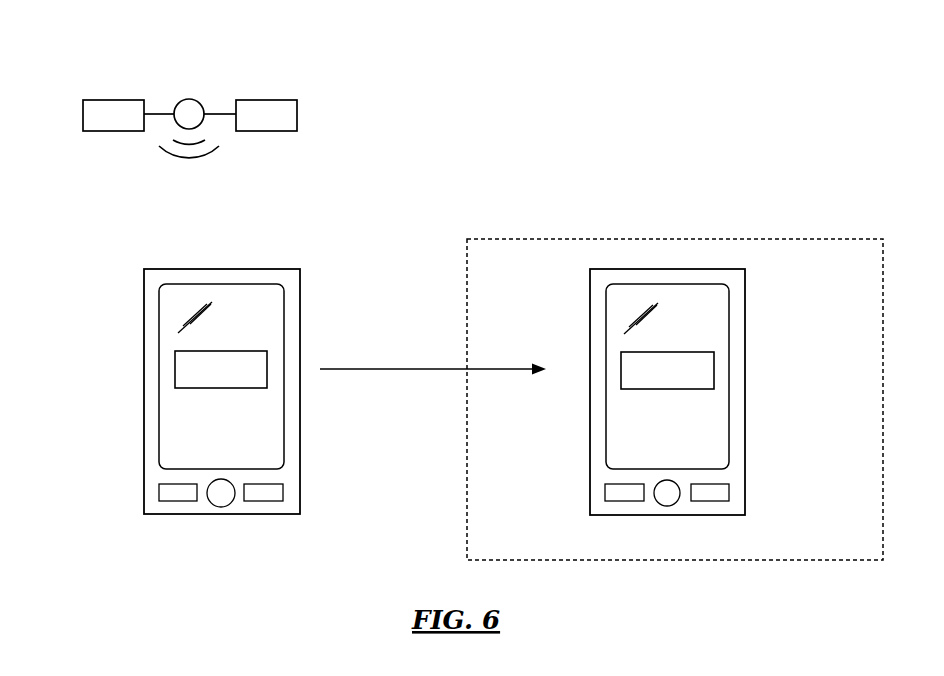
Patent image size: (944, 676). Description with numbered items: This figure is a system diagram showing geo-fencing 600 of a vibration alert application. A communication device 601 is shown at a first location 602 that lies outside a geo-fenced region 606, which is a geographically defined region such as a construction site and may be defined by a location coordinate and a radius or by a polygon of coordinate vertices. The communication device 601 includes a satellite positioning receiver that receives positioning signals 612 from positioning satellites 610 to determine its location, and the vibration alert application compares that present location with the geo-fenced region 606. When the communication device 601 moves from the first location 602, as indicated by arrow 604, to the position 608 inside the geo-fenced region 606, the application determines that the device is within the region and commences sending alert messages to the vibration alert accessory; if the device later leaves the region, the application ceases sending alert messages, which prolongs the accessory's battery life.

The geo-fencing 600 is at (483, 309).
The positioning satellites 610 is at (188, 99).
The positioning signals 612 is at (215, 151).
The communication device 601 is at (143, 403).
The first location 602 is at (222, 405).
The arrow 604 is at (390, 368).
The geo-fenced region 606 is at (531, 239).
The position inside the geo-fenced region 608 is at (667, 405).